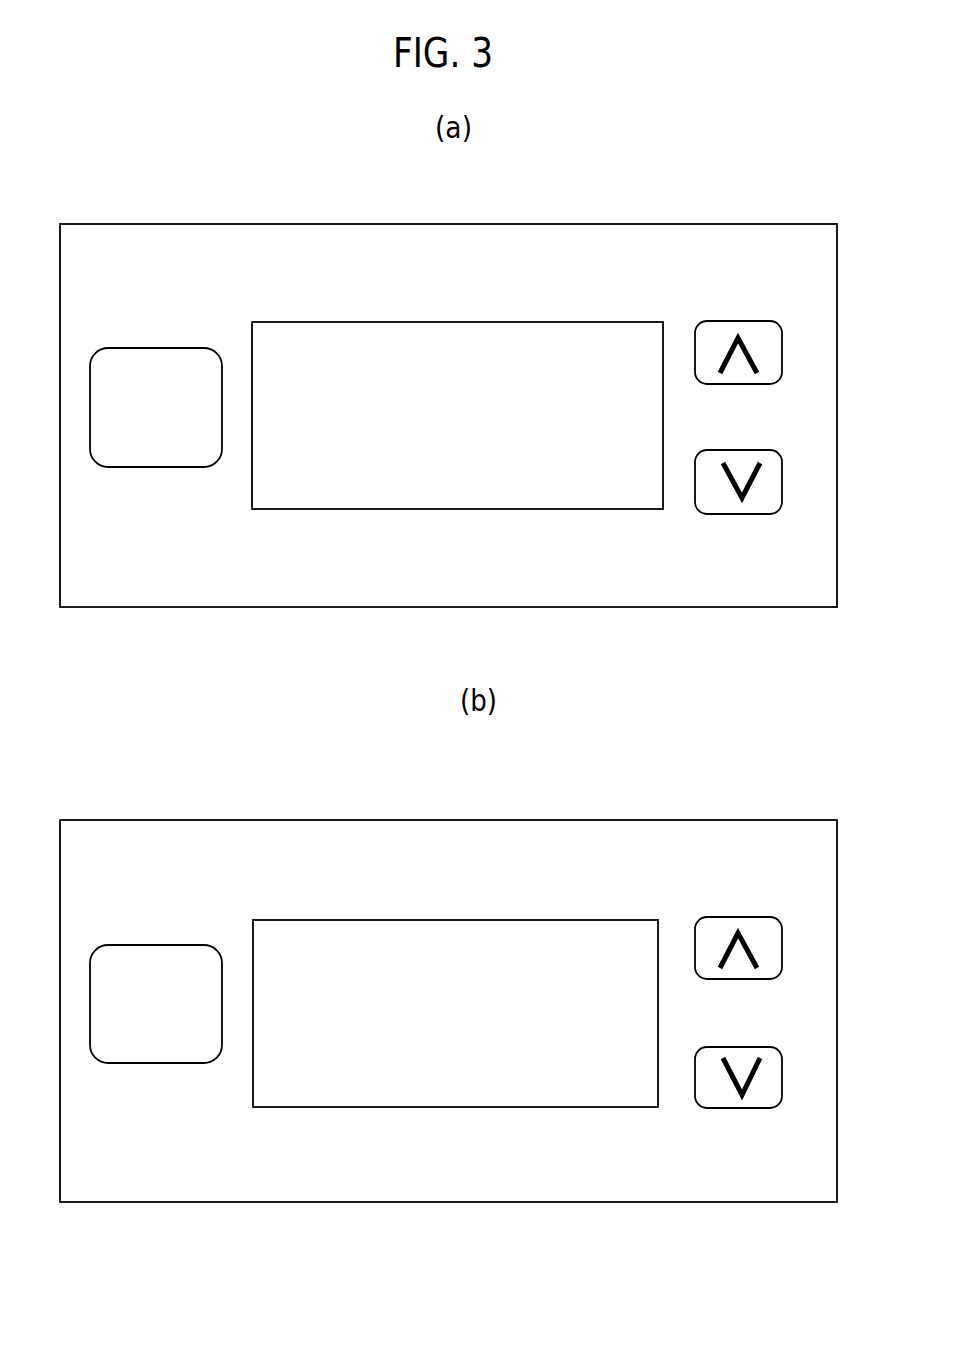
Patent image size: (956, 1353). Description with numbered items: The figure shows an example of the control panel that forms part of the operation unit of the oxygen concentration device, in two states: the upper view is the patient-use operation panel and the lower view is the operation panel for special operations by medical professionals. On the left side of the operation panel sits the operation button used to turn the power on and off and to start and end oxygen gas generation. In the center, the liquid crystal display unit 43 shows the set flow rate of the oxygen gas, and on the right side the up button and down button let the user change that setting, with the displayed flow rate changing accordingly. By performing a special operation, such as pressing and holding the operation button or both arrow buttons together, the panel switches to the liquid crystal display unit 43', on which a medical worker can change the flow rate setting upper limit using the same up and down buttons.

The liquid crystal display unit 43 is at (463, 386).
The liquid crystal display unit 43' is at (491, 984).